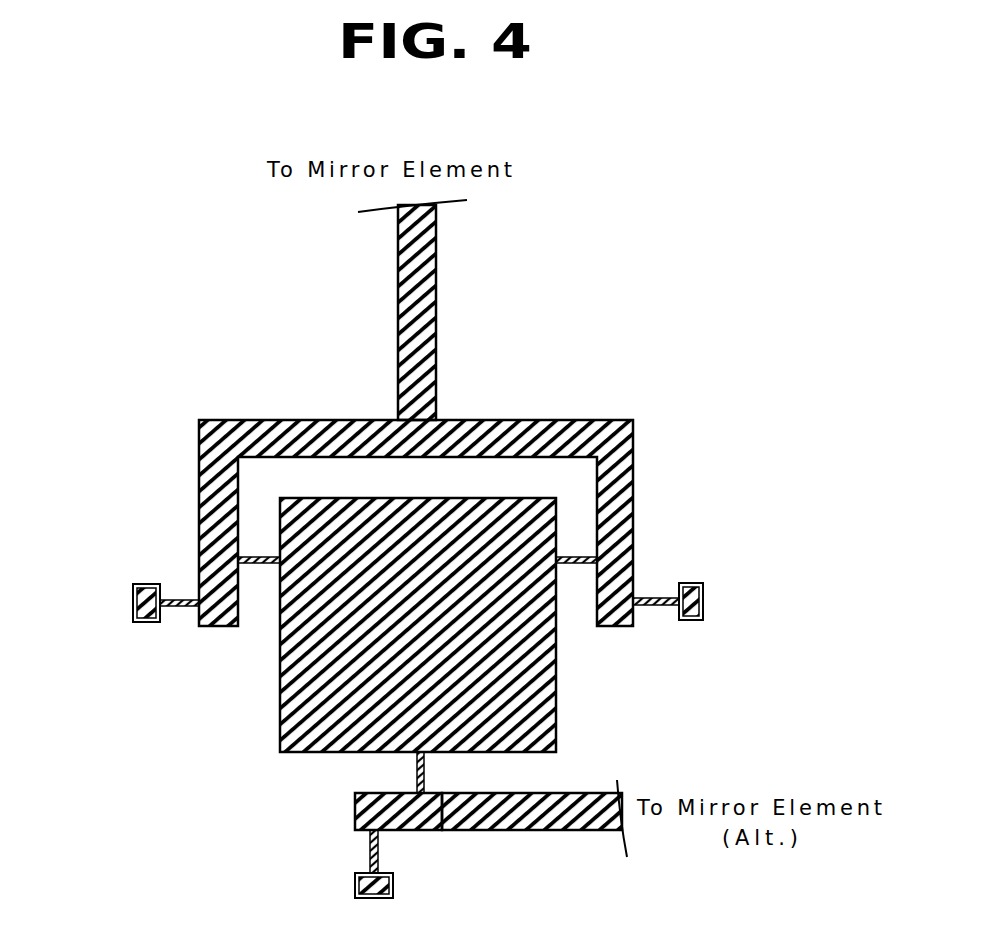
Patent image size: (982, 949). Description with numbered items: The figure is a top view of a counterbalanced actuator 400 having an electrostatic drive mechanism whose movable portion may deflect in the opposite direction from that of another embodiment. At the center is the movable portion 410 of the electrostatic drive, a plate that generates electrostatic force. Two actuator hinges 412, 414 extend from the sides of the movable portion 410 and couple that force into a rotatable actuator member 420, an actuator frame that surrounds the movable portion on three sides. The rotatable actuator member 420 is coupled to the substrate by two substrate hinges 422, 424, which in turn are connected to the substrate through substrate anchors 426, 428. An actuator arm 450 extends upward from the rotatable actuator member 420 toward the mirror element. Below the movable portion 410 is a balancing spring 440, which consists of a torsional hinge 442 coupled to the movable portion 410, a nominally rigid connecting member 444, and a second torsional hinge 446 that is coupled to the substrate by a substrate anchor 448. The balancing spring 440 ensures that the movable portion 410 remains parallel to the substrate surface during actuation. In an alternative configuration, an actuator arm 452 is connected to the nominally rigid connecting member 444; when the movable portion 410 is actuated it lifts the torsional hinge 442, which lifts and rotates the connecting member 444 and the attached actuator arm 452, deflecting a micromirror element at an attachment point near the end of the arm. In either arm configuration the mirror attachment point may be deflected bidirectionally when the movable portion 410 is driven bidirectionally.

The counterbalanced actuator 400 is at (108, 178).
The movable portion of electrostatic drive mechanism 410 is at (555, 700).
The actuator hinge 412 is at (570, 557).
The actuator hinge 414 is at (258, 557).
The rotatable actuator member 420 is at (592, 418).
The substrate hinge 422 is at (657, 598).
The substrate hinge 424 is at (182, 600).
The substrate anchor 426 is at (703, 597).
The substrate anchor 428 is at (133, 600).
The balancing spring 440 is at (478, 874).
The torsional hinge 442 is at (425, 762).
The nominally rigid connecting member 444 is at (355, 812).
The torsional hinge 446 is at (372, 852).
The substrate anchor 448 is at (362, 880).
The actuator arm 450 is at (435, 297).
The actuator arm 452 is at (475, 832).